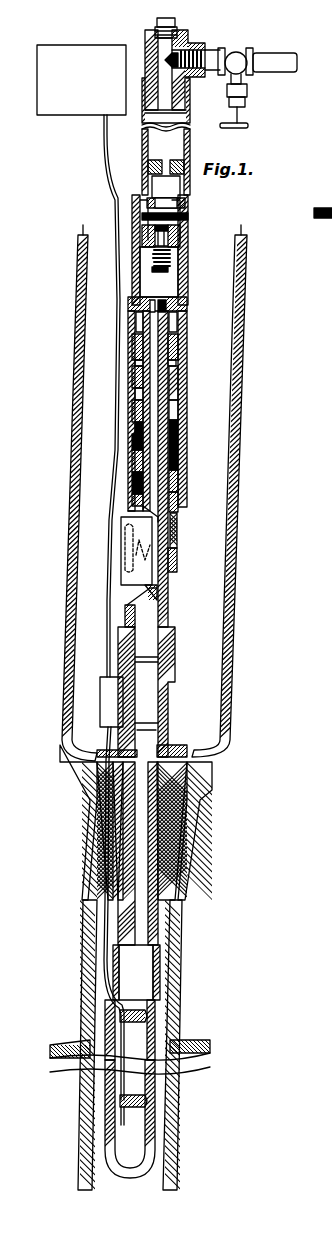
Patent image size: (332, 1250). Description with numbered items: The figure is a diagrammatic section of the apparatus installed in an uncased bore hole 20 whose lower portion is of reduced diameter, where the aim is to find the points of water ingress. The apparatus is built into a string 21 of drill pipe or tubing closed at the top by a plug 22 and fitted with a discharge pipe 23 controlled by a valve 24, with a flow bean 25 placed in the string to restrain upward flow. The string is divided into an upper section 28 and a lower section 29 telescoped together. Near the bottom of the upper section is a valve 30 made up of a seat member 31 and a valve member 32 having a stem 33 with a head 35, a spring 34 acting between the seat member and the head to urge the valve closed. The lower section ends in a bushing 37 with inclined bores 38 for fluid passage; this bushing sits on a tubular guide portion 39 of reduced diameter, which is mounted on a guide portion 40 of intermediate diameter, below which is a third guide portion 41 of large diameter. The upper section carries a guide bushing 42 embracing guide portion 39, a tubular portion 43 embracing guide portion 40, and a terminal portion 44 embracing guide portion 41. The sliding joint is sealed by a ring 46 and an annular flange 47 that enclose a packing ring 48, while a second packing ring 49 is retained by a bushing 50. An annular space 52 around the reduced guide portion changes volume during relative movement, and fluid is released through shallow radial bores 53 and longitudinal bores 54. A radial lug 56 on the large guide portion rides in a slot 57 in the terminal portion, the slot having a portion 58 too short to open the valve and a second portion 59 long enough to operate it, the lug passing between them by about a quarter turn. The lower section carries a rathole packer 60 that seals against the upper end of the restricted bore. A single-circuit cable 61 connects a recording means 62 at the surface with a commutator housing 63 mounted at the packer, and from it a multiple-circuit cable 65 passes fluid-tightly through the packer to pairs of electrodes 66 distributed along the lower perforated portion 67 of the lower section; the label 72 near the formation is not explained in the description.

The bore hole 20 is at (175, 922).
The string of drill pipe or tubing 21 is at (143, 135).
The plug 22 is at (145, 35).
The discharge pipe 23 is at (208, 52).
The valve 24 is at (248, 78).
The flow bean 25 is at (143, 165).
The upper section 28 is at (198, 405).
The lower section 29 is at (178, 698).
The valve 30 is at (185, 221).
The seat member 31 is at (137, 236).
The valve member 32 is at (147, 225).
The stem 33 is at (185, 242).
The spring 34 is at (165, 258).
The head 35 is at (168, 269).
The bushing 37 is at (135, 298).
The inclined bores 38 is at (138, 313).
The tubular guide portion 39 is at (140, 402).
The guide portion 40 is at (130, 500).
The third guide portion 41 is at (120, 603).
The guide bushing 42 is at (184, 340).
The tubular portion 43 is at (184, 511).
The terminal portion 44 is at (176, 570).
The ring 46 is at (132, 432).
The annular flange 47 is at (132, 460).
The packing ring 48 is at (180, 445).
The second packing ring 49 is at (184, 490).
The bushing 50 is at (184, 470).
The annular space 52 is at (172, 416).
The shallow radial bores 53 is at (135, 353).
The longitudinal bores 54 is at (130, 378).
The radial lug 56 is at (150, 540).
The slot 57 is at (121, 540).
The slot portion 58 is at (160, 560).
The second slot portion 59 is at (120, 555).
The rathole packer 60 is at (190, 818).
The single-circuit cable 61 is at (101, 129).
The recording means 62 is at (92, 87).
The commutator housing 63 is at (103, 700).
The multiple-circuit cable 65 is at (103, 905).
The pairs of electrodes 66 is at (148, 1015).
The lower perforated portion 67 is at (107, 1038).
The formation 72 is at (331, 754).